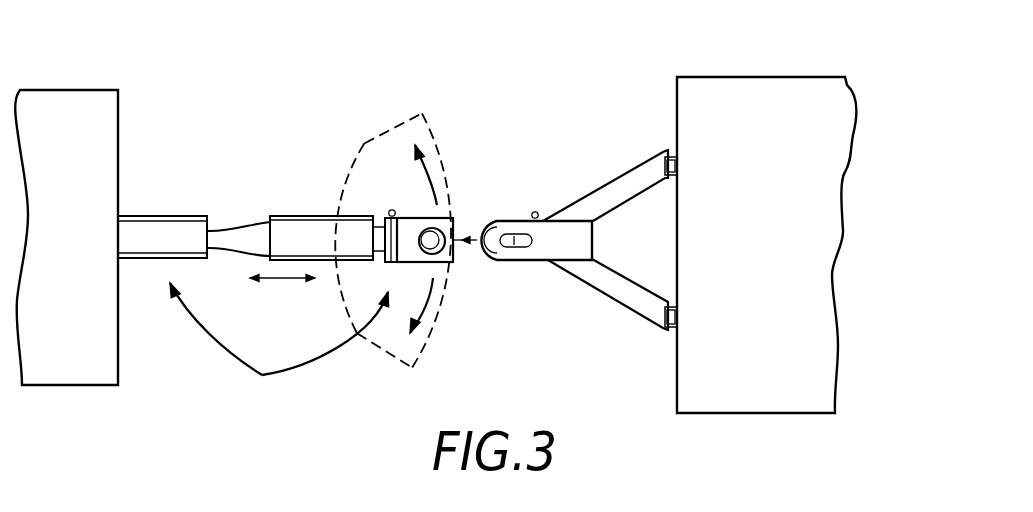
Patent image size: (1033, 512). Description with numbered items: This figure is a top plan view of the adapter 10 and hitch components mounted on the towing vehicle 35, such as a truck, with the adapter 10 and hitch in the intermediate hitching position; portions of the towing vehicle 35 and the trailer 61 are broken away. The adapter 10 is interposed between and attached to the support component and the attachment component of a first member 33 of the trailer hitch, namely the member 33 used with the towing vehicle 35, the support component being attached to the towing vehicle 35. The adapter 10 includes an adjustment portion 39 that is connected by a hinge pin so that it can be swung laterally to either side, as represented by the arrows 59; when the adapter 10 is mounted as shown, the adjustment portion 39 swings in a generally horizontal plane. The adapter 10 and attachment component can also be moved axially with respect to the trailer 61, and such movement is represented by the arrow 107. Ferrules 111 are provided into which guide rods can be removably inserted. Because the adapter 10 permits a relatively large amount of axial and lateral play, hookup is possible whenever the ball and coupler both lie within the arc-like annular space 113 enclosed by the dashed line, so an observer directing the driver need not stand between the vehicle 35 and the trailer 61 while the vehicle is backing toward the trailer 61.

The adapter 10 is at (275, 155).
The first member 33 is at (279, 349).
The towing vehicle 35 is at (80, 90).
The adjustment portion 39 is at (300, 218).
The arrows 59 is at (428, 177).
The trailer 61 is at (733, 397).
The arrow 107 is at (270, 280).
The ferrules 111 is at (390, 210).
The space 113 is at (418, 115).